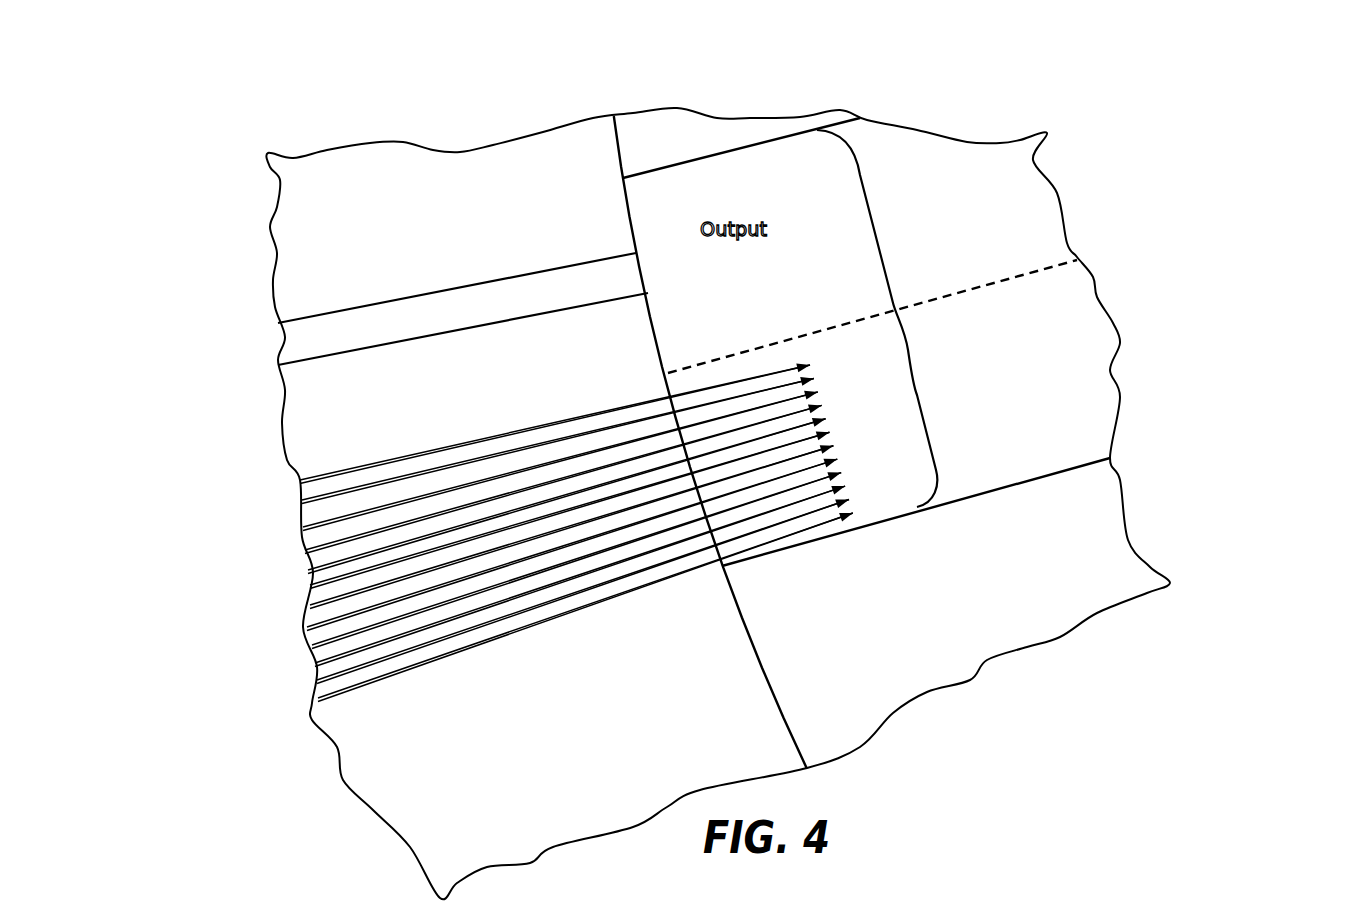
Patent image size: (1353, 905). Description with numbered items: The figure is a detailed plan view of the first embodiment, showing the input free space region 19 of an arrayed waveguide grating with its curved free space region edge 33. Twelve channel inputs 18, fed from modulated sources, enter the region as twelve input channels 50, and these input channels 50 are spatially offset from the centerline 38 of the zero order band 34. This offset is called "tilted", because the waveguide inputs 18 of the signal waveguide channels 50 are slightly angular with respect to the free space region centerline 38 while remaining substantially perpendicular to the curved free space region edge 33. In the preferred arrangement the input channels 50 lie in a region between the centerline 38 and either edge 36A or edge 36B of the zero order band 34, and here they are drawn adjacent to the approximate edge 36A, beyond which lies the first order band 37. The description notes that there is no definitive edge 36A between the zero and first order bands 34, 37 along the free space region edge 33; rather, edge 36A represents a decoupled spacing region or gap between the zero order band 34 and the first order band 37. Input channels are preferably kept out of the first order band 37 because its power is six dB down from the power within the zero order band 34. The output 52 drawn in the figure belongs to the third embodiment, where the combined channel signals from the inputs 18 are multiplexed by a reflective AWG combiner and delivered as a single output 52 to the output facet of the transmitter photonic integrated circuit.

The free space region edge 33 is at (626, 141).
The output 52 is at (517, 290).
The edge of zero order band 36B is at (753, 132).
The centerline of zero order band 38 is at (1003, 273).
The zero order band 34 is at (900, 311).
The edge of zero order band 36A is at (1058, 462).
The input channels 50 is at (283, 483).
The channel inputs 18 is at (880, 486).
The input free space region 19 is at (958, 560).
The first order band 37 is at (909, 657).